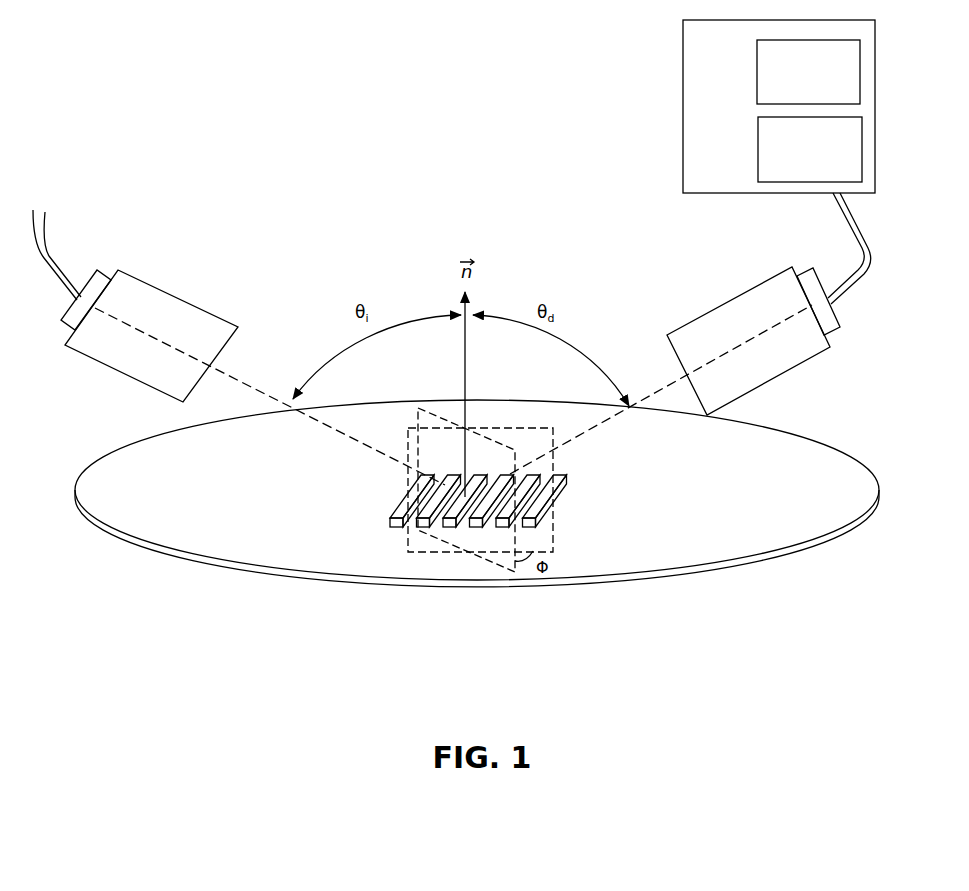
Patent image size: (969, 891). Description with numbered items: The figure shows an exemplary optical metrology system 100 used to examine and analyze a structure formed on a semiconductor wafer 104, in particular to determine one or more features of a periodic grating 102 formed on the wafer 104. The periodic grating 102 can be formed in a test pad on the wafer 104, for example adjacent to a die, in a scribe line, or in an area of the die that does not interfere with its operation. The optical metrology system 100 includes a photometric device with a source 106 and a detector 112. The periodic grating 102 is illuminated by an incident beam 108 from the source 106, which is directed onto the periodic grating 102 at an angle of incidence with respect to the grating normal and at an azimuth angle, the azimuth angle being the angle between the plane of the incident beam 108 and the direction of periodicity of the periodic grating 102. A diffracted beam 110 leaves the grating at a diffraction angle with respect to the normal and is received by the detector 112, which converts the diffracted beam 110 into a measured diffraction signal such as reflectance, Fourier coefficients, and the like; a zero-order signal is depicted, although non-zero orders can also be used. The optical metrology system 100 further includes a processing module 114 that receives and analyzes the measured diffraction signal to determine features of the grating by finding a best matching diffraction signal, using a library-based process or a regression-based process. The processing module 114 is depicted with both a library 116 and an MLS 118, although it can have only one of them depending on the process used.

The optical metrology system 100 is at (352, 136).
The periodic grating 102 is at (391, 542).
The semiconductor wafer 104 is at (137, 431).
The source 106 is at (140, 277).
The incident beam 108 is at (217, 372).
The diffracted beam 110 is at (661, 389).
The detector 112 is at (787, 375).
The processing module 114 is at (739, 51).
The library 116 is at (827, 160).
The MLS 118 is at (825, 83).